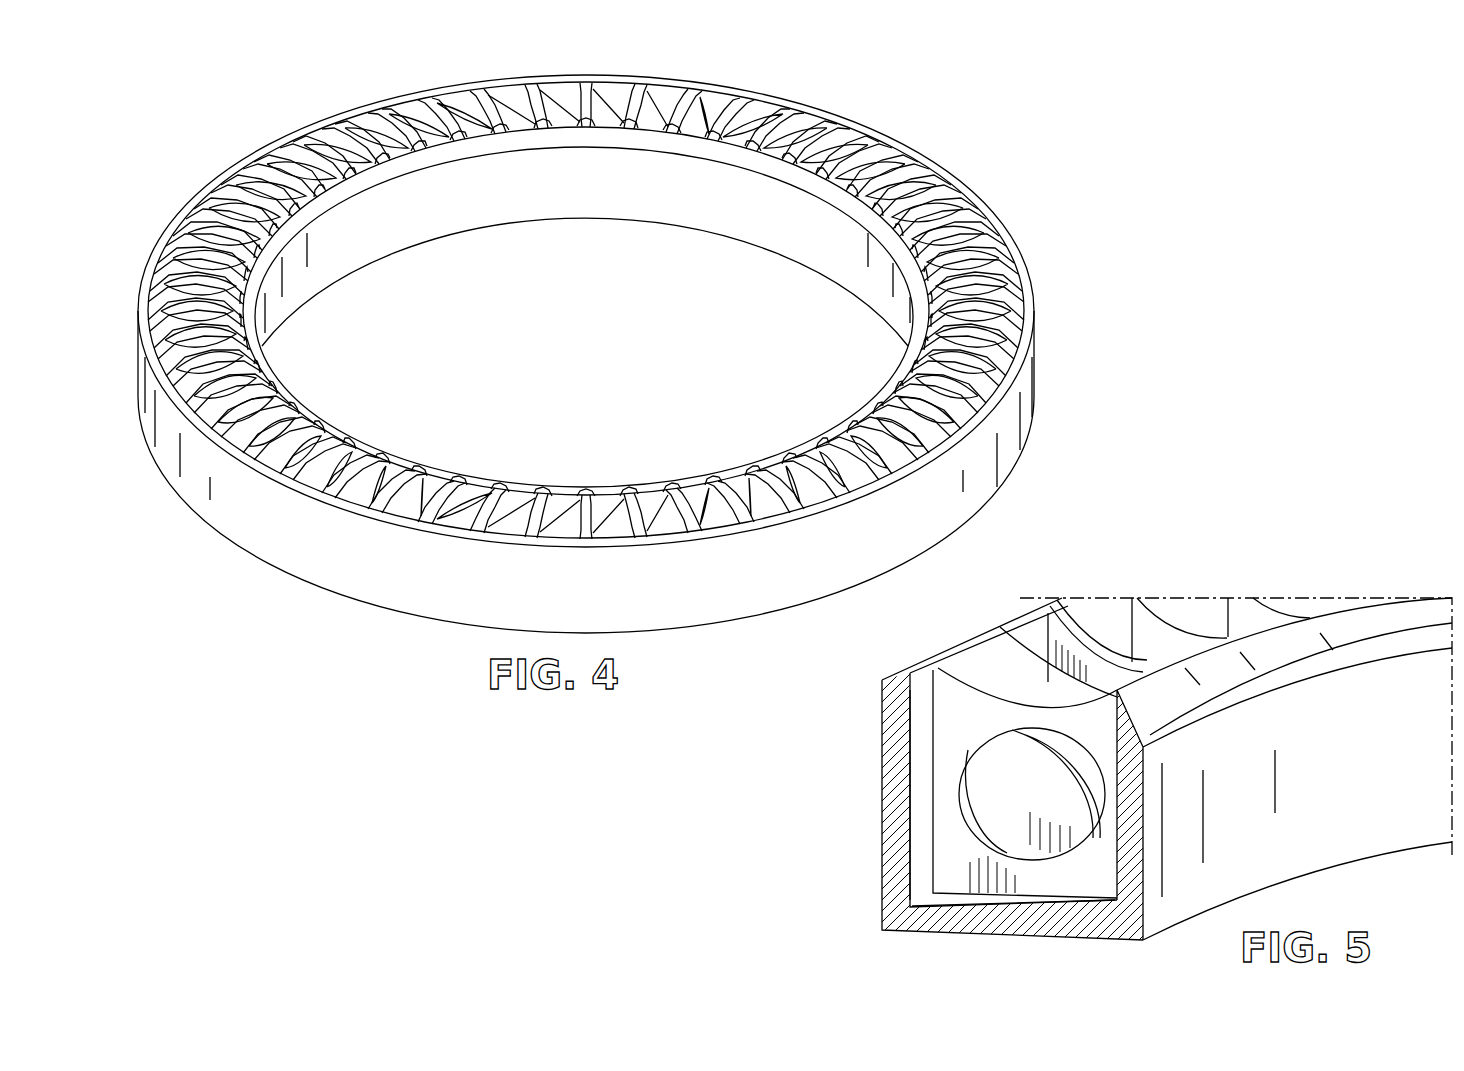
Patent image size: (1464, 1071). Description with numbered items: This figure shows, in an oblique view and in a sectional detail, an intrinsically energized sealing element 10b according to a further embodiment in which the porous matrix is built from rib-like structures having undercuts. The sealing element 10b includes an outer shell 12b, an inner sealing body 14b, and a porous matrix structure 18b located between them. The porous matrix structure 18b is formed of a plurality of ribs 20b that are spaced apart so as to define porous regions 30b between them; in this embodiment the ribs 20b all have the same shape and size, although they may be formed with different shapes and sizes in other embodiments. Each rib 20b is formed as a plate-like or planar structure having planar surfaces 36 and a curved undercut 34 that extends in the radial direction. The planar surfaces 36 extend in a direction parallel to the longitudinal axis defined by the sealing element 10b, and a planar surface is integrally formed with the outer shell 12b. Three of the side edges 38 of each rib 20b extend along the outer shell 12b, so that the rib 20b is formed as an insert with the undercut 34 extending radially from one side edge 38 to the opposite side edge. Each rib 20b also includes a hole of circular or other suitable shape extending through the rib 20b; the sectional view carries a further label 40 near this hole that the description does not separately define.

In FIG. 4, the intrinsically energized sealing element 10b is at (148, 182).
In FIG. 5, the intrinsically energized sealing element 10b is at (832, 748).
In FIG. 4, the outer shell 12b is at (228, 490).
In FIG. 5, the outer shell 12b is at (895, 824).
In FIG. 4, the inner sealing body 14b is at (258, 352).
In FIG. 5, the inner sealing body 14b is at (1146, 728).
In FIG. 4, the porous matrix structure 18b is at (155, 298).
In FIG. 5, the porous matrix structure 18b is at (1093, 625).
In FIG. 4, the ribs 20b is at (318, 470).
In FIG. 5, the ribs 20b is at (1080, 878).
In FIG. 4, the porous regions 30b is at (312, 468).
In FIG. 5, the porous regions 30b is at (998, 674).
In FIG. 4, the undercut 34 is at (258, 388).
In FIG. 5, the undercut 34 is at (968, 688).
In FIG. 5, the planar surfaces 36 is at (945, 874).
In FIG. 5, the side edges 38 is at (930, 781).
In FIG. 5, the cage pocket opening 40 is at (1032, 860).